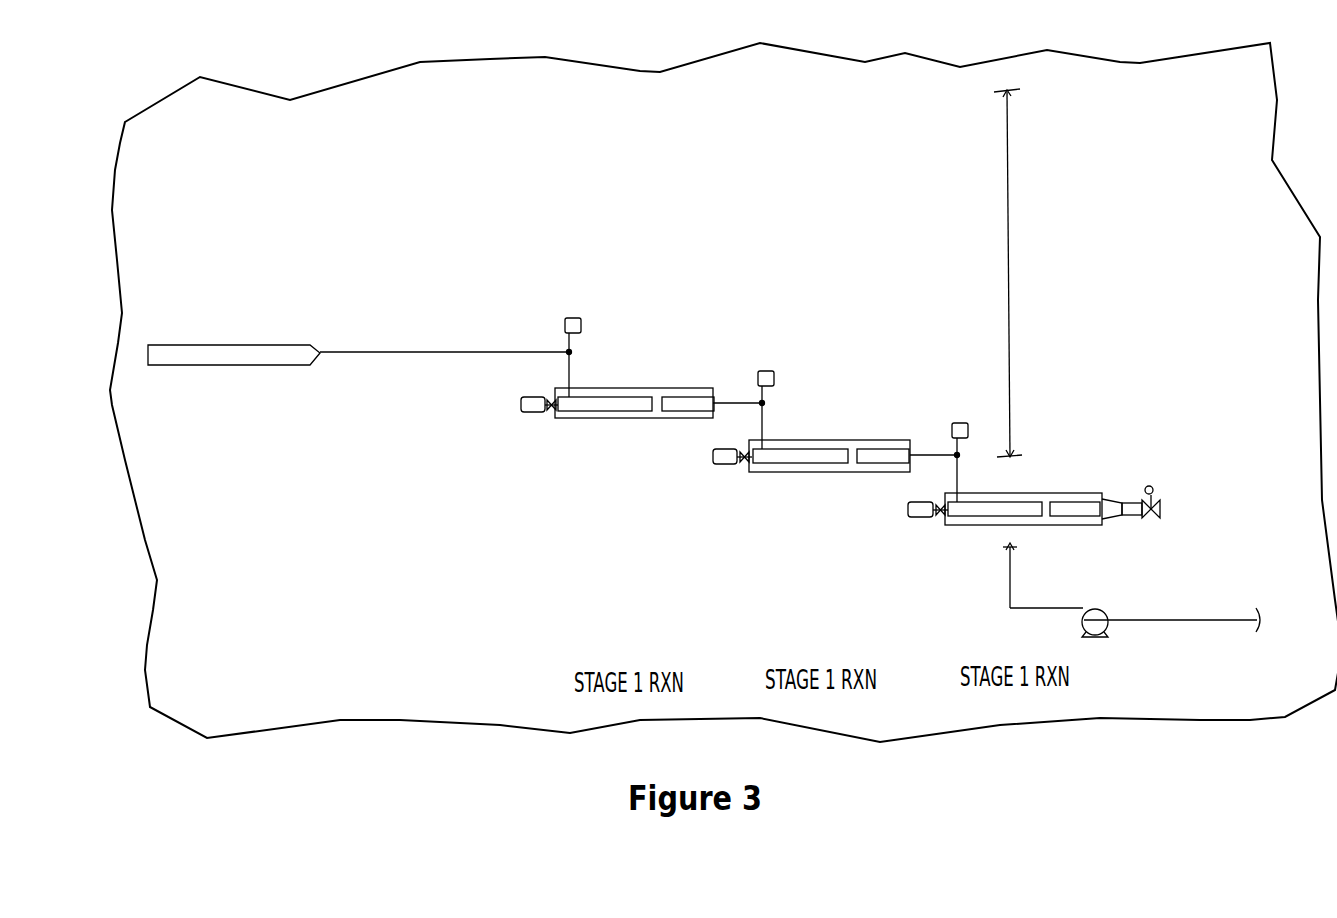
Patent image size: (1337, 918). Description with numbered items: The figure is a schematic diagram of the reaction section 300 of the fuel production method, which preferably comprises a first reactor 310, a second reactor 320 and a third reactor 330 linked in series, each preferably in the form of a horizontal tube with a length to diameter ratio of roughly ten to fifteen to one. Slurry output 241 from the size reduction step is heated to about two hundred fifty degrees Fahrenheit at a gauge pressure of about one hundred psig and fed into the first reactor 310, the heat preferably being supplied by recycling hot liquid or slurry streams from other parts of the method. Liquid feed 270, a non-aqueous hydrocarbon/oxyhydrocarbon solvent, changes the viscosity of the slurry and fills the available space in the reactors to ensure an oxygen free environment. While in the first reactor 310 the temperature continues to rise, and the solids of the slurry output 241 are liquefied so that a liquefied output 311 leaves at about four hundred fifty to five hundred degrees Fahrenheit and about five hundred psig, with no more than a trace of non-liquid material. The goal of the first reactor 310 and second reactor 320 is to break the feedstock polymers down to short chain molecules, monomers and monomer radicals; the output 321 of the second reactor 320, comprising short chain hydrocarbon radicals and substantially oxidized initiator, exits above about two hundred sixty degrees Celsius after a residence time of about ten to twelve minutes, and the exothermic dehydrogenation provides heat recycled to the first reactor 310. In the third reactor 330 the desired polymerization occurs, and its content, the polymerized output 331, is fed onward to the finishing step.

The reaction section 300 is at (617, 161).
The liquid feed 270 is at (1010, 263).
The slurry output 241 is at (552, 412).
The first reactor 310 is at (633, 420).
The liquefied output 311 is at (716, 396).
The second reactor 320 is at (827, 473).
The output of second reactor 321 is at (911, 440).
The third reactor 330 is at (1036, 527).
The polymerized output 331 is at (1105, 527).